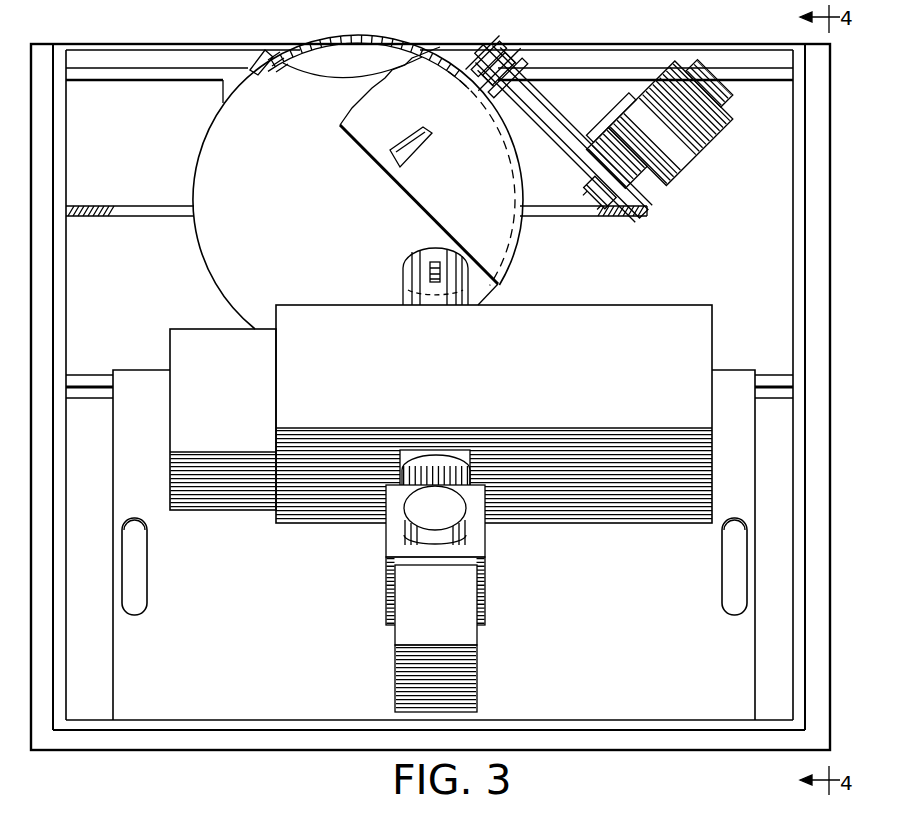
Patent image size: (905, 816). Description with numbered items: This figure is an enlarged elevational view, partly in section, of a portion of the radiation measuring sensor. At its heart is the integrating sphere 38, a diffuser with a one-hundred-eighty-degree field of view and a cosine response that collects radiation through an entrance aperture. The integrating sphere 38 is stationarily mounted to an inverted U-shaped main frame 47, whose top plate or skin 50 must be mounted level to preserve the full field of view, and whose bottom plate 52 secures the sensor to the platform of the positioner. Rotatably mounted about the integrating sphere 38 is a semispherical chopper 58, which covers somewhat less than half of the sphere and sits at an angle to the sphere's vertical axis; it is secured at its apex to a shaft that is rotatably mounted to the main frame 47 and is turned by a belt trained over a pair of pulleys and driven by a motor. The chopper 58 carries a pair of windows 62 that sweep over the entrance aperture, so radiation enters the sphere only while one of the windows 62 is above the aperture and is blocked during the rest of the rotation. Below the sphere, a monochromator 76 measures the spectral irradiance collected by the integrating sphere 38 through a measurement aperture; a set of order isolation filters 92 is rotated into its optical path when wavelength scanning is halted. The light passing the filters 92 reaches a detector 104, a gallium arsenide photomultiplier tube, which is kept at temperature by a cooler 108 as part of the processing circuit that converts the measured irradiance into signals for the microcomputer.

The integrating sphere 38 is at (210, 165).
The main frame 47 is at (828, 226).
The top plate or skin 50 is at (678, 52).
The bottom plate 52 is at (562, 721).
The semispherical chopper 58 is at (518, 192).
The windows 62 is at (412, 152).
The monochromator 76 is at (574, 372).
The order isolation filters 92 is at (463, 471).
The detector 104 is at (458, 519).
The cooler 108 is at (461, 616).